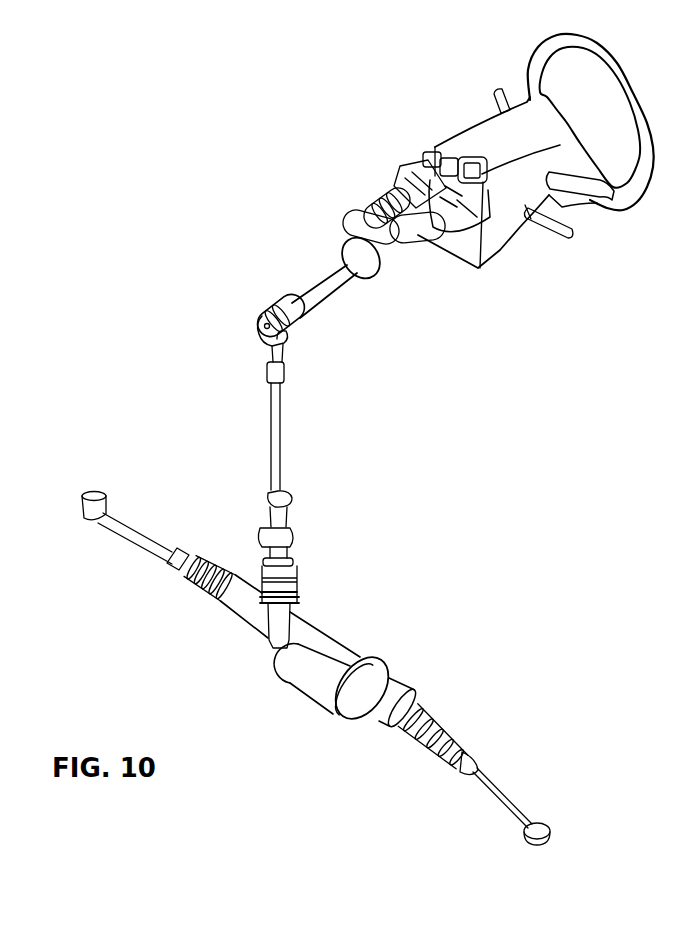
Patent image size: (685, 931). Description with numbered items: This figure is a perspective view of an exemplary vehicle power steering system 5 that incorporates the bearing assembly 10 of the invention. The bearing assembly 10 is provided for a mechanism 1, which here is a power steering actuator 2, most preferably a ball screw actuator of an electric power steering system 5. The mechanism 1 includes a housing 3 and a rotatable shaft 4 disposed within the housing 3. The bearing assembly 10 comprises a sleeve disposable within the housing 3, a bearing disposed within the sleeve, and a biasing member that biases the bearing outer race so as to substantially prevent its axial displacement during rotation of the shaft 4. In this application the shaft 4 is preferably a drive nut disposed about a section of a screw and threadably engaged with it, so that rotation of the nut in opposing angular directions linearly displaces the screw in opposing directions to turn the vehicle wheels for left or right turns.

The mechanism 1 is at (446, 673).
The power steering actuator 2 is at (402, 736).
The housing 3 is at (367, 720).
The rotatable shaft 4 is at (308, 629).
The vehicle power steering system 5 is at (223, 232).
The bearing assembly 10 is at (371, 661).